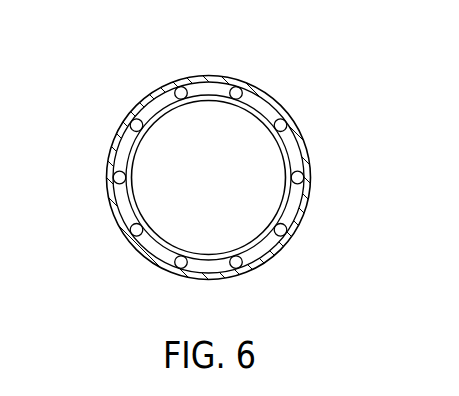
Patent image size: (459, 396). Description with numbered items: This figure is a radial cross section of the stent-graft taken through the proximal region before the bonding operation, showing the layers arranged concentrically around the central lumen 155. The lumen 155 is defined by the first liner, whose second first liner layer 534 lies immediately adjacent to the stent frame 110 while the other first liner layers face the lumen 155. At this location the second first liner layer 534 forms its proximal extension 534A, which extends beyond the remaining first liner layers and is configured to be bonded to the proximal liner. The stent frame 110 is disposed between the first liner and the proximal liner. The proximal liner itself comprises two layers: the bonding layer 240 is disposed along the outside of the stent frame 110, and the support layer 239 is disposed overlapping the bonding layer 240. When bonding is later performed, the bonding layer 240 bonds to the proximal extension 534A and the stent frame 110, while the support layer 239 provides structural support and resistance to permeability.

The support layer 239 is at (136, 110).
The bonding layer 240 is at (270, 96).
The proximal extension 534A is at (165, 95).
The stent frame 110 is at (238, 89).
The second first liner layer 534 is at (212, 256).
The lumen 155 is at (237, 166).